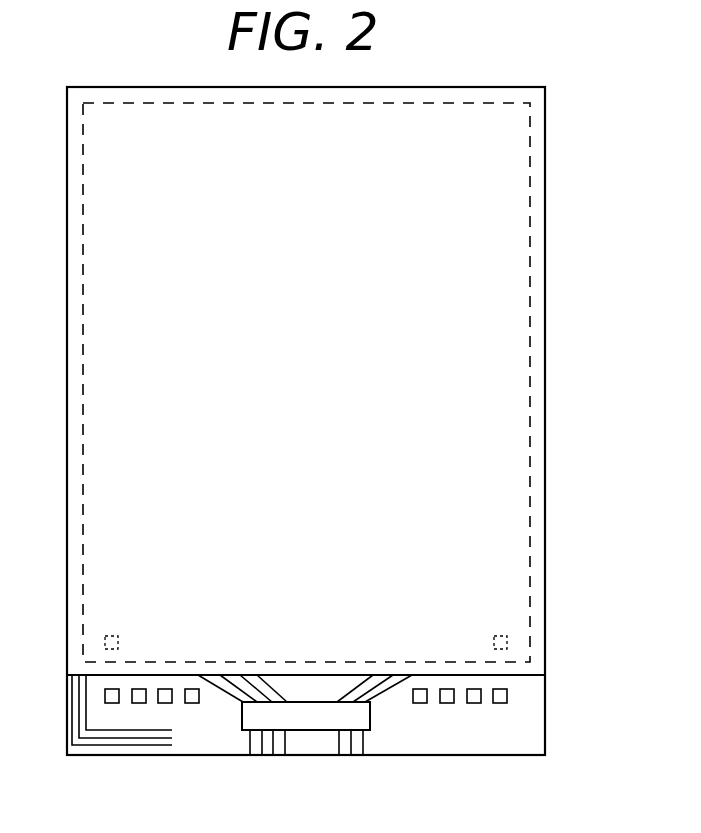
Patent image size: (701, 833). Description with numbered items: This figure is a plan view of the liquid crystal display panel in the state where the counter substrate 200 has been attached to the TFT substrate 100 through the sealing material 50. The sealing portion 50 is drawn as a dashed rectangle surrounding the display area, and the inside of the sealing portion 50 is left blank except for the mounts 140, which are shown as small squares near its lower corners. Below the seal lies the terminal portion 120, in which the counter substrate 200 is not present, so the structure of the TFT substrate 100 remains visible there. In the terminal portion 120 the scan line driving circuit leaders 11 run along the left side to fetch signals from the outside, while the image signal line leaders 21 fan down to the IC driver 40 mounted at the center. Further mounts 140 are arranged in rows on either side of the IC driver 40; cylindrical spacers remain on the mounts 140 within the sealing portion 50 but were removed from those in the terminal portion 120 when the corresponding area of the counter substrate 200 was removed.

The TFT substrate 100 is at (545, 730).
The counter substrate 200 is at (545, 360).
The sealing material 50 is at (530, 425).
The mounts 140 is at (507, 643).
The scan line driving circuit leaders 11 is at (78, 701).
The image signal line leaders 21 is at (387, 690).
The IC driver 40 is at (248, 715).
The terminal portion 120 is at (468, 733).